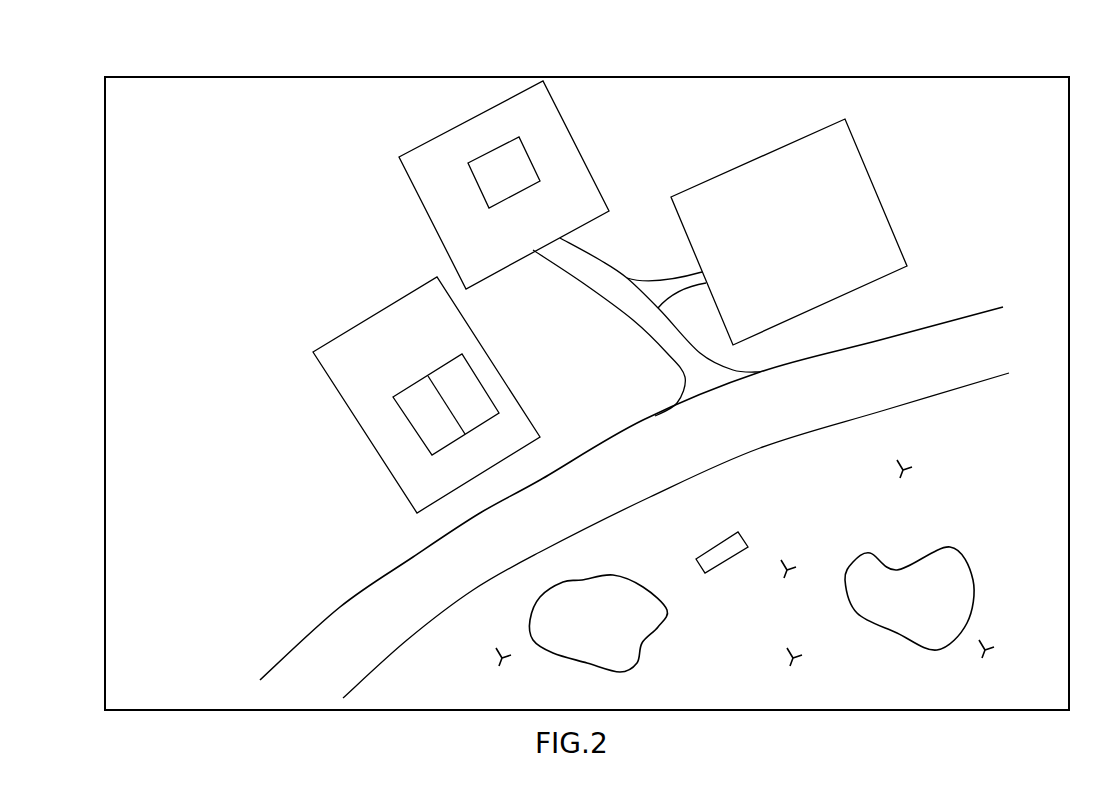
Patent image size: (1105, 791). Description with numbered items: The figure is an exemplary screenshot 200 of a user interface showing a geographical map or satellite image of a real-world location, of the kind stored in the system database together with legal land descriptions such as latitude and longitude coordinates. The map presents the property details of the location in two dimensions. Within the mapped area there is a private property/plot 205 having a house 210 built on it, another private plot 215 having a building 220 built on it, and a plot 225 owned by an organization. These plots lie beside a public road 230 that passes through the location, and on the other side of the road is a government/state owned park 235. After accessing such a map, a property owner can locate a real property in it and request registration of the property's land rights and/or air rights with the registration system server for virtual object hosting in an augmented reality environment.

The screenshot 200 is at (132, 75).
The private property/plot 205 is at (337, 383).
The house 210 is at (410, 430).
The private plot 215 is at (412, 166).
The building 220 is at (477, 185).
The plot owned by an organization 225 is at (760, 158).
The public road 230 is at (928, 338).
The government/state owned park 235 is at (953, 497).